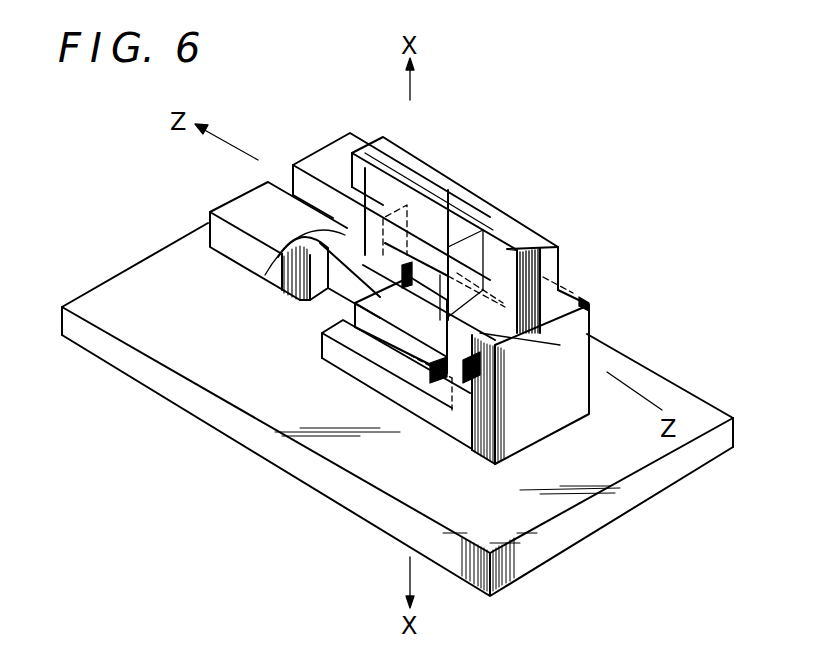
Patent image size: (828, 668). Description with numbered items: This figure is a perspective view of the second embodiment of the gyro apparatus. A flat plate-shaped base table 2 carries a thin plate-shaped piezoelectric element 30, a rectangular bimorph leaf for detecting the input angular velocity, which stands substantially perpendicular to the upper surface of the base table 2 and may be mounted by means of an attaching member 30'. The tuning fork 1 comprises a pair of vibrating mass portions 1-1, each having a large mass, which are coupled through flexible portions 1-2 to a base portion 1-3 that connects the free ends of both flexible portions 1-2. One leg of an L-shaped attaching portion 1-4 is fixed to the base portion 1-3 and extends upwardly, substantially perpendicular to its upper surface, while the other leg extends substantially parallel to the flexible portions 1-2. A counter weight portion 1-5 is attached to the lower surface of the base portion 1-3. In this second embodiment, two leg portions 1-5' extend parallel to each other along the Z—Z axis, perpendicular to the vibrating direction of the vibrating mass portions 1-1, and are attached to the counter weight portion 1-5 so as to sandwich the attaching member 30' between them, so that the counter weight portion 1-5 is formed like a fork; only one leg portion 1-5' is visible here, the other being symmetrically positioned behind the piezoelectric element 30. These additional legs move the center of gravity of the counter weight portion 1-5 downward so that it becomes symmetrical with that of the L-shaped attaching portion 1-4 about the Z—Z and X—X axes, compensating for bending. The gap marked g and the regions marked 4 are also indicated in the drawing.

The tuning fork 1 is at (632, 222).
The vibrating mass portion 1-1 is at (307, 227).
The flexible portion 1-2 is at (460, 222).
The base portion 1-3 is at (503, 330).
The L-shaped attaching portion 1-4 is at (537, 242).
The counter weight portion 1-5 is at (539, 333).
The leg portion 1-5' is at (397, 389).
The base table 2 is at (636, 466).
The gap 4 is at (570, 296).
The piezoelectric element 30 is at (322, 284).
The attaching member 30' is at (381, 347).
The gap g is at (272, 262).